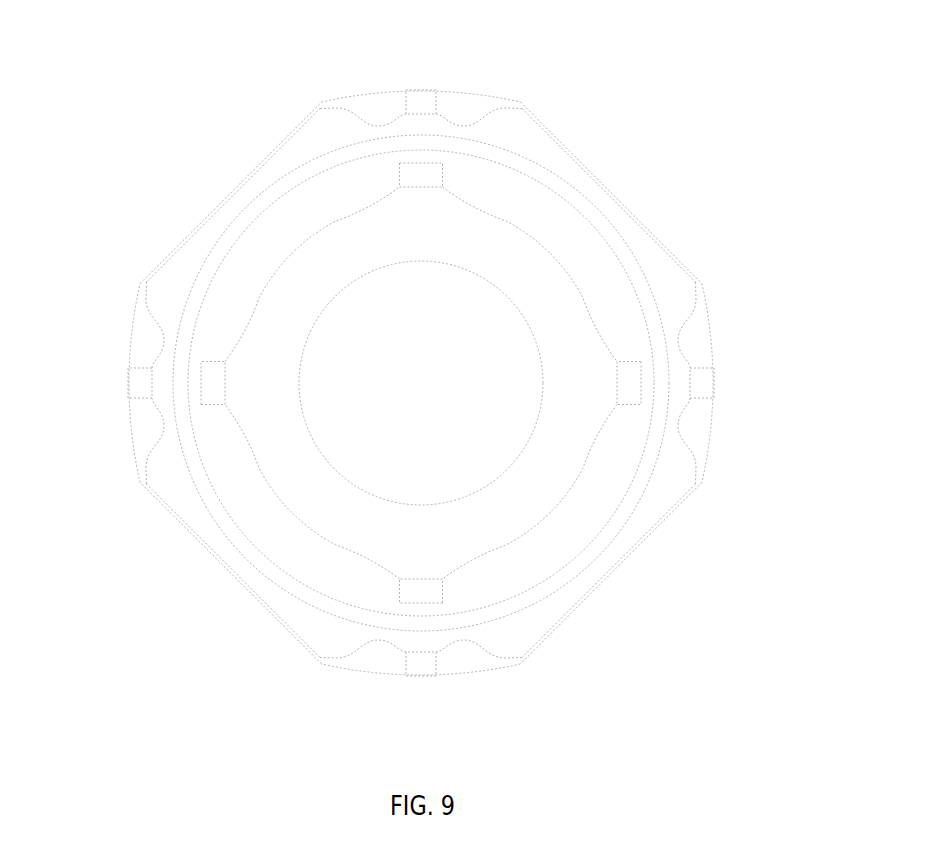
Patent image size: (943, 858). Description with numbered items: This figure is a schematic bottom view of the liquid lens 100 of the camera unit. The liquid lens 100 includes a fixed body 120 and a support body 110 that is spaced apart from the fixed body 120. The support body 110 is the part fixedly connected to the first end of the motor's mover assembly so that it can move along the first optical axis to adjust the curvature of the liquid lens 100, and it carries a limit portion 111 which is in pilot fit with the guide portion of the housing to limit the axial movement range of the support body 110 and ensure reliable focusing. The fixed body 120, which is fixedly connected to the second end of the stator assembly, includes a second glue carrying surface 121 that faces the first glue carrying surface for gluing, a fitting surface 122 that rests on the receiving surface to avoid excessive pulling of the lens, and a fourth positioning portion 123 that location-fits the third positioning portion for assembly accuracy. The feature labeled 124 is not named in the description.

The liquid lens 100 is at (686, 257).
The support body 110 is at (310, 500).
The limit portion 111 is at (420, 177).
The fixed body 120 is at (244, 178).
The second glue carrying surface 121 is at (169, 487).
The fitting surface 122 is at (568, 240).
The fourth positioning portion 123 is at (703, 378).
The left positioning notch 124 is at (142, 382).